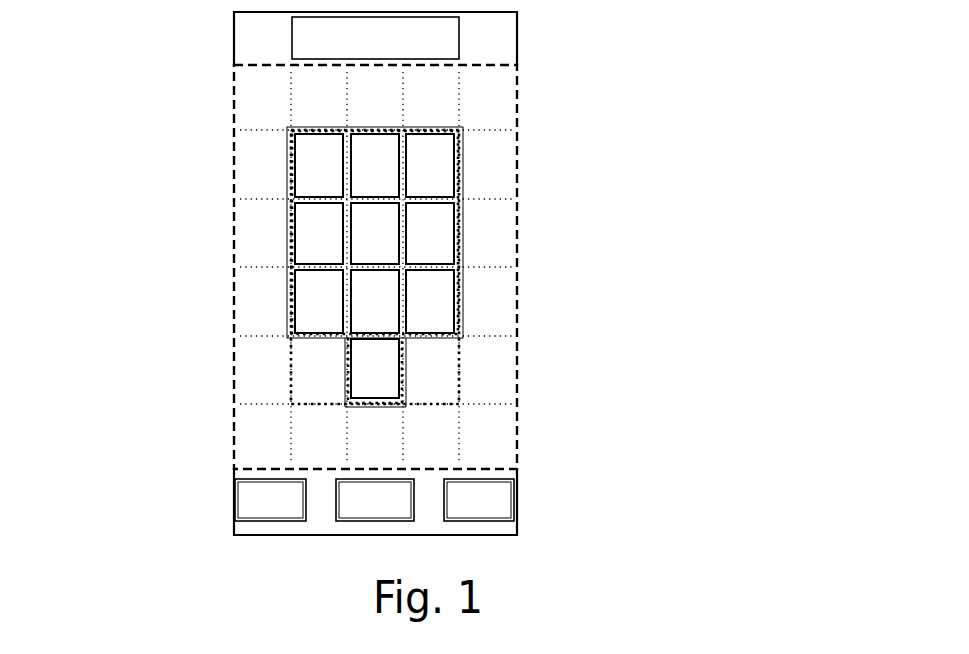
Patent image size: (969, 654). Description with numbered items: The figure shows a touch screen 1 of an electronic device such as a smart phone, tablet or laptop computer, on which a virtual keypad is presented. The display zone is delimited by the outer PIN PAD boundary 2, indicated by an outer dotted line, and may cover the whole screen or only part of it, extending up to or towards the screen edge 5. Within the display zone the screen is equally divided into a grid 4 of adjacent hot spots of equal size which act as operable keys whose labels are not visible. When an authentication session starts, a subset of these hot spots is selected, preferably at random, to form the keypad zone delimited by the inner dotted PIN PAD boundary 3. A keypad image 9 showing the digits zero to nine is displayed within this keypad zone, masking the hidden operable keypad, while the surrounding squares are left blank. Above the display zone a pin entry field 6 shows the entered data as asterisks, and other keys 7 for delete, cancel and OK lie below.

The screen of electronic device 1 is at (211, 120).
The outer PIN PAD boundary 2 is at (521, 115).
The PIN PAD boundary 3 is at (474, 188).
The screen equally divided in outer PIN PAD boundary 4 is at (491, 398).
The screen edge 5 is at (521, 436).
The pin entry 6 is at (463, 36).
The other keys 7 is at (240, 501).
The keypad image 9 is at (269, 254).